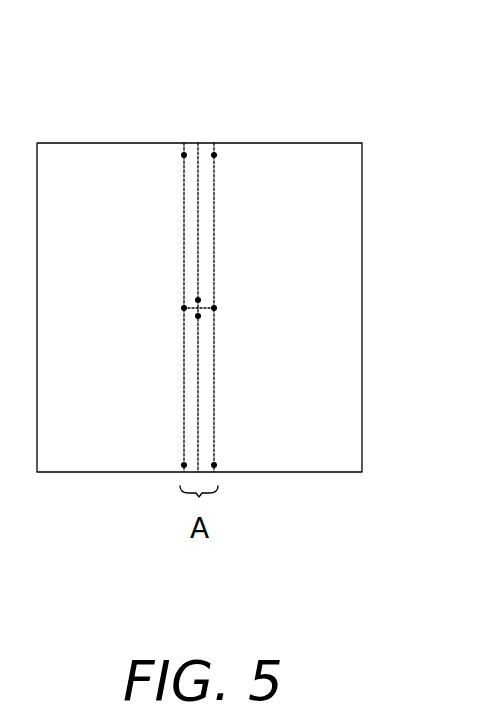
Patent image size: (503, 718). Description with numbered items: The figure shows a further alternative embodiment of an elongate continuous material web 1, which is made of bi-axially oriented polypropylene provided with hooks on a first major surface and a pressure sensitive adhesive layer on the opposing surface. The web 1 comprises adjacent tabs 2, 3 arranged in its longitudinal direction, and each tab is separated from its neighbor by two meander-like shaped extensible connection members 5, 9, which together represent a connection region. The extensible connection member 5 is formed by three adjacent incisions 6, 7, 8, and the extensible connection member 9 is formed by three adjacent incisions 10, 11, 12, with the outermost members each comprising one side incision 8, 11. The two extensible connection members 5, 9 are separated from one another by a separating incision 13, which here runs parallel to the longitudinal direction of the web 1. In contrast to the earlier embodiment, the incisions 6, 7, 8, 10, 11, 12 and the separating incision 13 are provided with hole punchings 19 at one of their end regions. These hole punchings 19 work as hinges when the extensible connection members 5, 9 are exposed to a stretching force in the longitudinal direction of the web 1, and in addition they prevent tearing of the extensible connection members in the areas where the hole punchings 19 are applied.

The elongate continuous material web 1 is at (374, 139).
The tab 2 is at (120, 323).
The tab 3 is at (298, 323).
The extensible connection member 5 is at (180, 157).
The incision 6 is at (186, 179).
The incision 7 is at (216, 188).
The side incision 8 is at (217, 161).
The extensible connection member 9 is at (183, 462).
The incision 10 is at (184, 443).
The side incision 11 is at (215, 467).
The incision 12 is at (214, 425).
The separating incision 13 is at (183, 305).
The hole punching 19 is at (189, 130).